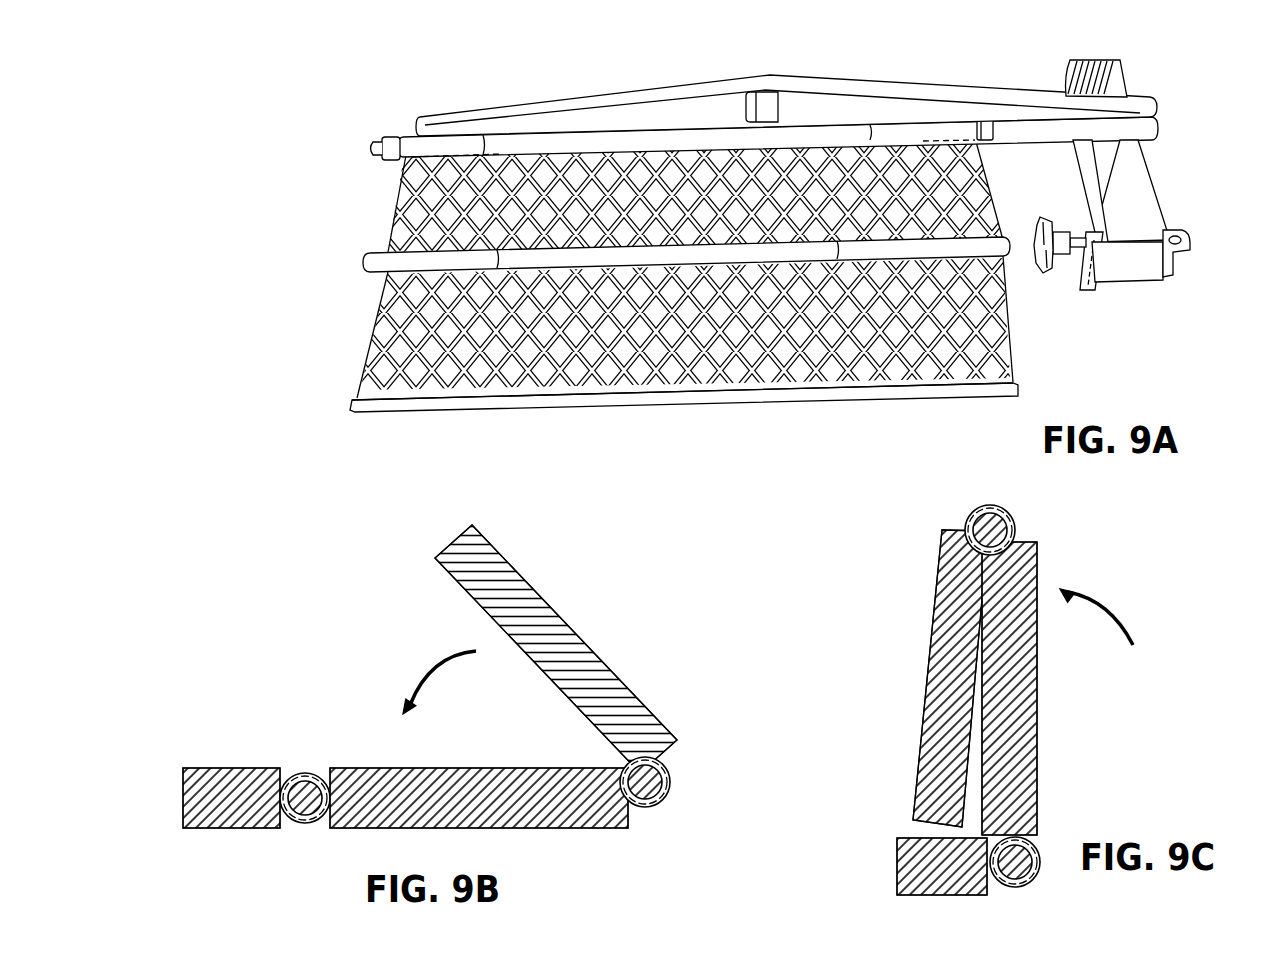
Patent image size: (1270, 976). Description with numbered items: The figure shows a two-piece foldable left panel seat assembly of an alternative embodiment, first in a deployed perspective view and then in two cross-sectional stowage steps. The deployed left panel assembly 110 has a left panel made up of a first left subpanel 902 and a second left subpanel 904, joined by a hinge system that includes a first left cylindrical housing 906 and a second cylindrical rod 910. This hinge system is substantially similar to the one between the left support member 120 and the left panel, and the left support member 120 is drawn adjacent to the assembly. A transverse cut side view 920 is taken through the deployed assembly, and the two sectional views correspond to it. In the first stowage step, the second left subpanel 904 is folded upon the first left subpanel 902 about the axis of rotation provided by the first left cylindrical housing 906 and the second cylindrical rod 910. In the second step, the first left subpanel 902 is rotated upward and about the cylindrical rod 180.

In FIG. 9A, the left panel assembly 110 is at (684, 466).
In FIG. 9A, the left support member 120 is at (692, 117).
In FIG. 9B, the left support member 120 is at (267, 769).
In FIG. 9C, the left support member 120 is at (898, 877).
In FIG. 9C, the cylindrical rod 180 is at (1035, 858).
In FIG. 9A, the first left subpanel 902 is at (719, 174).
In FIG. 9B, the first left subpanel 902 is at (473, 746).
In FIG. 9C, the first left subpanel 902 is at (1037, 747).
In FIG. 9A, the second left subpanel 904 is at (637, 327).
In FIG. 9B, the second left subpanel 904 is at (556, 649).
In FIG. 9C, the second left subpanel 904 is at (928, 644).
In FIG. 9A, the first left cylindrical housing 906 is at (646, 237).
In FIG. 9B, the first left cylindrical housing 906 is at (705, 782).
In FIG. 9C, the first left cylindrical housing 906 is at (1016, 530).
In FIG. 9B, the second cylindrical rod 910 is at (695, 805).
In FIG. 9A, the transverse cut side view 920 is at (337, 259).